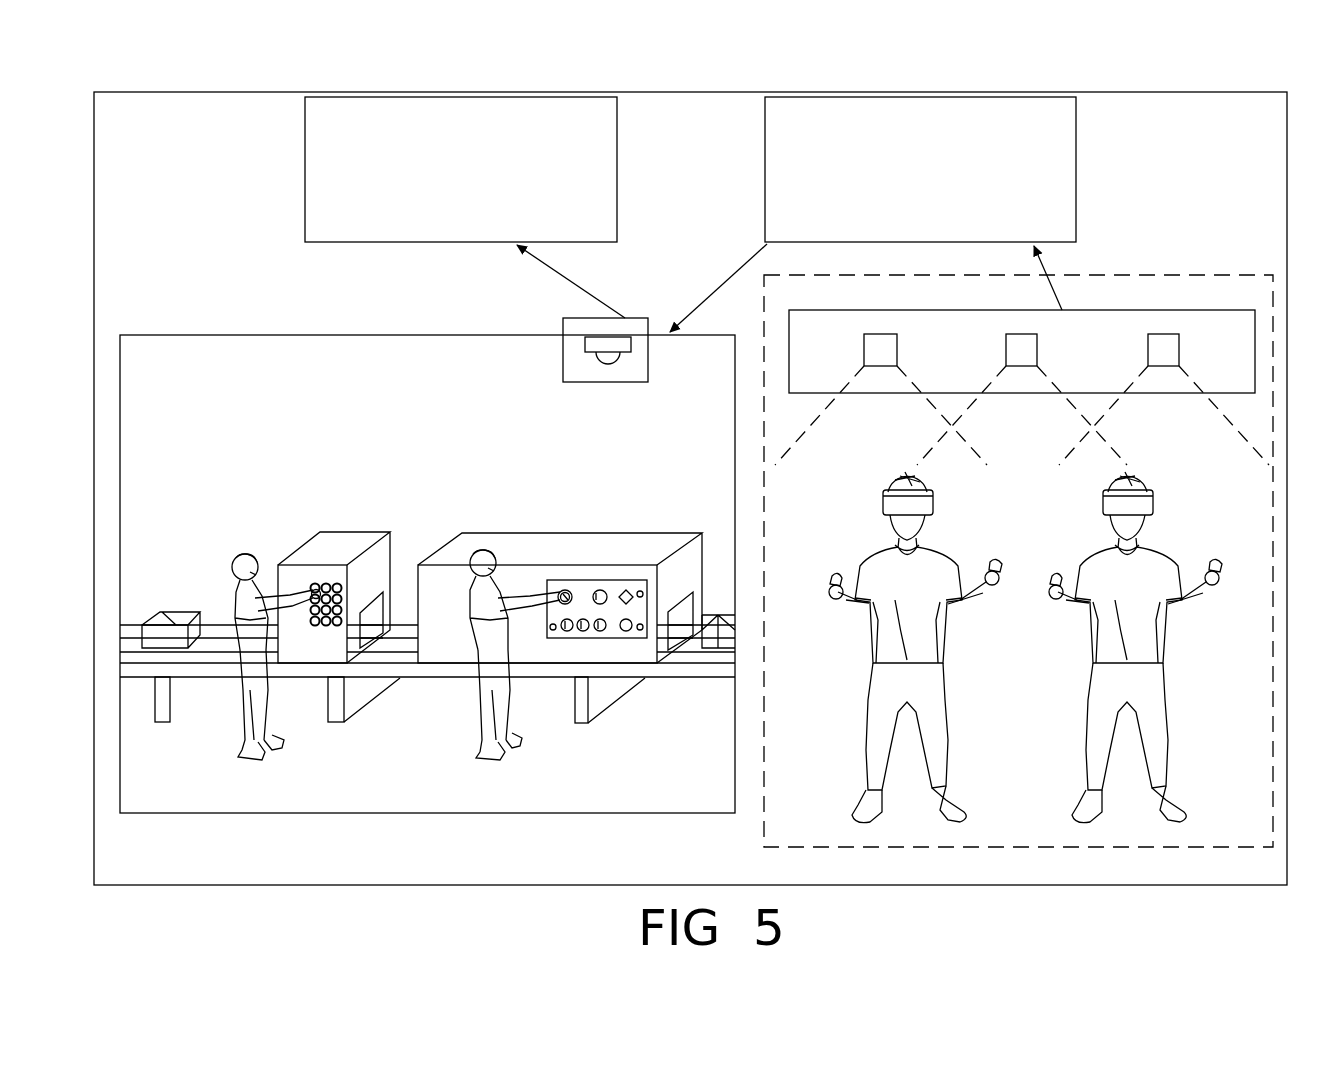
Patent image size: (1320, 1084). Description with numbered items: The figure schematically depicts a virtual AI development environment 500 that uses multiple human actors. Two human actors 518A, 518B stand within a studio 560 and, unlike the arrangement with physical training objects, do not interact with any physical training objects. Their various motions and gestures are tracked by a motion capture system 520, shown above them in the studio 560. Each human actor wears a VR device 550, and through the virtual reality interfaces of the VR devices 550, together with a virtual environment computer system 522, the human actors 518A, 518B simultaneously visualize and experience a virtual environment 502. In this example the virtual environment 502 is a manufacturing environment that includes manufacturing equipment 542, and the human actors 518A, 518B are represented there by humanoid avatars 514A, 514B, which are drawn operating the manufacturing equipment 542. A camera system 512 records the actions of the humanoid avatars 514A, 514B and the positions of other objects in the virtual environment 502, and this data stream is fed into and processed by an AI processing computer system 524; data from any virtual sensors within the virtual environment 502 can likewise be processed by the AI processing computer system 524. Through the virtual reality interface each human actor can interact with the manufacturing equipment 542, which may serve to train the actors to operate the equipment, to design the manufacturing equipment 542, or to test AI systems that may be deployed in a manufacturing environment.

The virtual AI development environment 500 is at (1198, 90).
The virtual environment 502 is at (287, 320).
The camera system 512 is at (563, 347).
The humanoid avatar 514A is at (234, 547).
The humanoid avatar 514B is at (473, 530).
The human actor 518A is at (869, 467).
The human actor 518B is at (1185, 418).
The motion capture system 520 is at (988, 310).
The virtual environment computer system 522 is at (765, 160).
The AI processing computer system 524 is at (305, 143).
The manufacturing equipment 542 is at (321, 521).
The VR device 550 is at (933, 500).
The studio 560 is at (1207, 275).